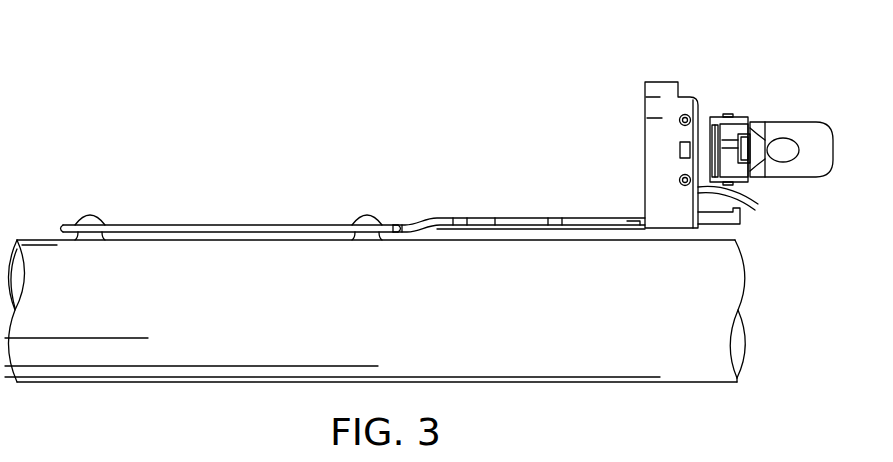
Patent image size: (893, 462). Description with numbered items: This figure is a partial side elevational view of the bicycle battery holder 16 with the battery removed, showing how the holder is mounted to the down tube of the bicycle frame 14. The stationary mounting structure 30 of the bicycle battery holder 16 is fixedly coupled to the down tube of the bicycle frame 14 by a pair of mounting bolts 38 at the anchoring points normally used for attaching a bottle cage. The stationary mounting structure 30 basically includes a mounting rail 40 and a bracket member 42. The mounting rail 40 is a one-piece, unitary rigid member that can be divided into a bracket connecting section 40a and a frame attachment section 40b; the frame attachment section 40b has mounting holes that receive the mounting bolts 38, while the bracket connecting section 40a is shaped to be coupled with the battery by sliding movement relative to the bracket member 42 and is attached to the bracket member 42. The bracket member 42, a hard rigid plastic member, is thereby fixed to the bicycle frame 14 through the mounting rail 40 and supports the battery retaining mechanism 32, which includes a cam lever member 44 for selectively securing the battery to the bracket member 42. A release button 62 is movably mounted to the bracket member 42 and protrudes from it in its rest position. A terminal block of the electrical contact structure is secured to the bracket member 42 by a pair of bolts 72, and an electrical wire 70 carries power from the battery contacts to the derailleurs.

The bicycle frame 14 is at (35, 239).
The bicycle battery holder 16 is at (690, 83).
The stationary mounting structure 30 is at (638, 283).
The battery retaining mechanism 32 is at (761, 103).
The mounting bolts 38 is at (92, 214).
The mounting rail 40 is at (530, 228).
The bracket connecting section 40a is at (507, 228).
The frame attachment section 40b is at (224, 229).
The bracket member 42 is at (669, 163).
The cam lever member 44 is at (783, 120).
The release button 62 is at (680, 152).
The electrical wire 70 is at (763, 202).
The bolts 72 is at (679, 123).